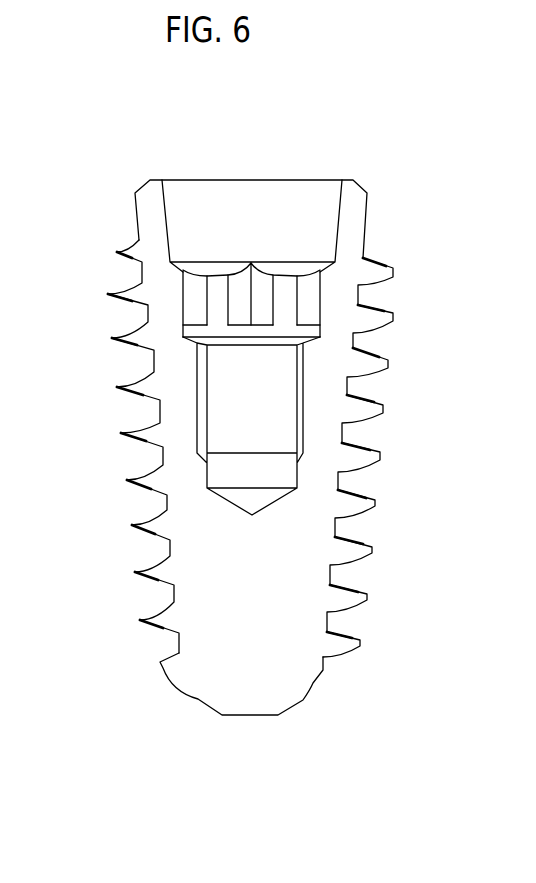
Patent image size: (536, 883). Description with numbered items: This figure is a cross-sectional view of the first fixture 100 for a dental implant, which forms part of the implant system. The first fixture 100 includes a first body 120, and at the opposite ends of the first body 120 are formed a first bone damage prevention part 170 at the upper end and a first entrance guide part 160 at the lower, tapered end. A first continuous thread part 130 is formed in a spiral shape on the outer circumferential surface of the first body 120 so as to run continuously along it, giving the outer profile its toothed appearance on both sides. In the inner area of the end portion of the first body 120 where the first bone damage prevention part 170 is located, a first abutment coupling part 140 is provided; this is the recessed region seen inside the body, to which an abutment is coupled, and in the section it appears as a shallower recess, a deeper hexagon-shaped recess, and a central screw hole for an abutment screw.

The first fixture 100 is at (112, 154).
The first body 120 is at (170, 366).
The first continuous thread part 130 is at (118, 452).
The first abutment coupling part 140 is at (247, 253).
The first entrance guide part 160 is at (192, 708).
The first bone damage prevention part 170 is at (128, 214).